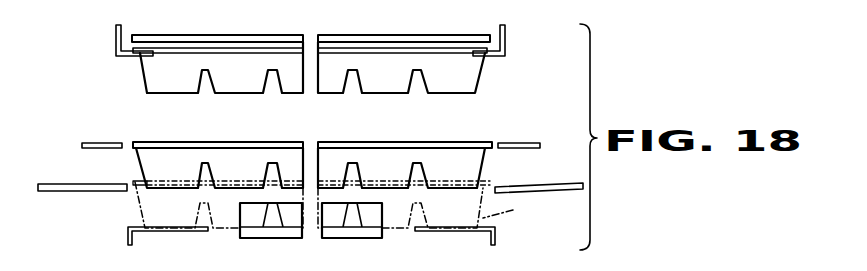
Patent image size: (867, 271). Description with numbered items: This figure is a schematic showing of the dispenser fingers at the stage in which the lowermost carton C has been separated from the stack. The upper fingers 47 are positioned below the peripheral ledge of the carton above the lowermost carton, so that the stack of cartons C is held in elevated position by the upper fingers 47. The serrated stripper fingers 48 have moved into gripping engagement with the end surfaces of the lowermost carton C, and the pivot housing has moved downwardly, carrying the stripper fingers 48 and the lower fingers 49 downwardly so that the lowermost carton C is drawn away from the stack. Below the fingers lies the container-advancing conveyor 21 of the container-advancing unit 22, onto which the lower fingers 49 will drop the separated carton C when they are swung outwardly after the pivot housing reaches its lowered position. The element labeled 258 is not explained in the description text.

The carton C is at (336, 57).
The upper fingers 47 is at (106, 42).
The serrated stripper fingers 48 is at (97, 138).
The lower fingers 49 is at (75, 174).
The container-advancing unit 22 is at (117, 235).
The container-advancing conveyor 21 is at (242, 244).
The box 258 is at (343, 255).